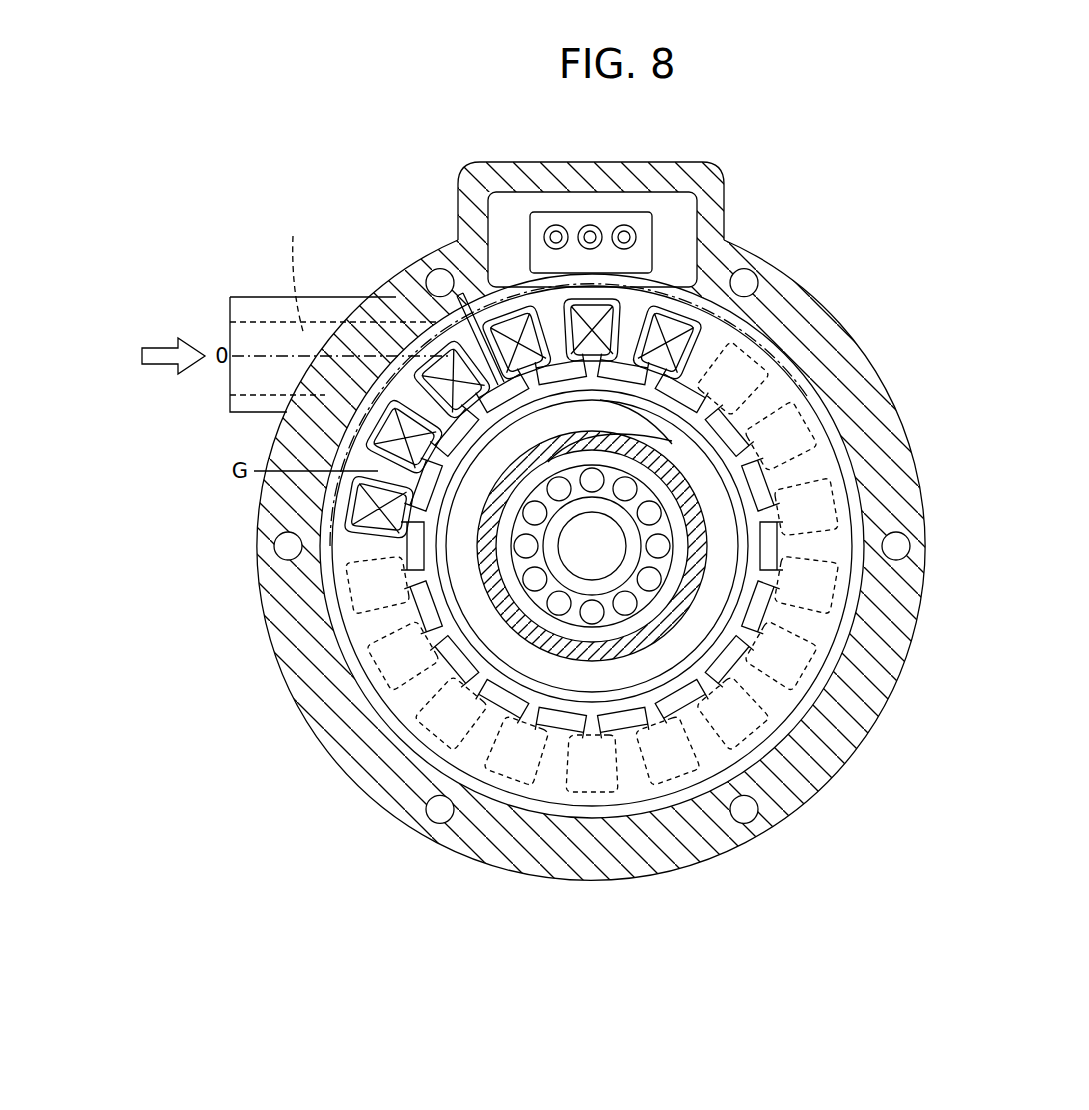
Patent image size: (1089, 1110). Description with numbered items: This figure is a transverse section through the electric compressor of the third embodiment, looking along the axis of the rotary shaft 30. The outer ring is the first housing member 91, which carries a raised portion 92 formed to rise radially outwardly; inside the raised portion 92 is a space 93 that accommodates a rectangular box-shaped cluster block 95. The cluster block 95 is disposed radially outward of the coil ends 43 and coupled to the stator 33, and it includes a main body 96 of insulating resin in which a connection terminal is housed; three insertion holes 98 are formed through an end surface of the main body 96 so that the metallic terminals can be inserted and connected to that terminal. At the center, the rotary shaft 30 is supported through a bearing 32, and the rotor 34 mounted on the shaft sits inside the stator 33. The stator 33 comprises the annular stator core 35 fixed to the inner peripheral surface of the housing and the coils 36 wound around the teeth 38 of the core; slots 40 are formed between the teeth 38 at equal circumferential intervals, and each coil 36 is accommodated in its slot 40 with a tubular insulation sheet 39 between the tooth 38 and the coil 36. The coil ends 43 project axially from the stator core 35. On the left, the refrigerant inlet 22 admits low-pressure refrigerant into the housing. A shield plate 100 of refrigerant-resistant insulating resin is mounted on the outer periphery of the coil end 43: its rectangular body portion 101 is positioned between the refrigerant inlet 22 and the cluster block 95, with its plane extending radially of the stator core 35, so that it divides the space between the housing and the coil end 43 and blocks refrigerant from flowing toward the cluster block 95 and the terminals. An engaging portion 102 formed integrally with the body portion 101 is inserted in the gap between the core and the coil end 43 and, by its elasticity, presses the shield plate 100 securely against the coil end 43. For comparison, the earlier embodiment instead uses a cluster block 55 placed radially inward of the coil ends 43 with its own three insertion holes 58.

The refrigerant inlet 22 is at (293, 273).
The rotary shaft 30 is at (605, 563).
The bearing 32 is at (706, 557).
The stator 33 is at (356, 690).
The rotor 34 is at (832, 652).
The stator core 35 is at (676, 280).
The coils 36 is at (350, 620).
The teeth 38 is at (433, 467).
The insulation sheet 39 is at (692, 322).
The slots 40 is at (700, 343).
The coil end 43 is at (818, 466).
The cluster block 55 is at (724, 386).
The insertion holes 58 is at (623, 431).
The first housing member 91 is at (919, 474).
The raised portion 92 is at (672, 163).
The space 93 is at (508, 203).
The cluster block 95 is at (657, 227).
The main body 96 is at (653, 266).
The insertion holes 98 is at (623, 226).
The shield plate 100 is at (396, 297).
The body portion 101 is at (490, 306).
The engaging portion 102 is at (500, 387).